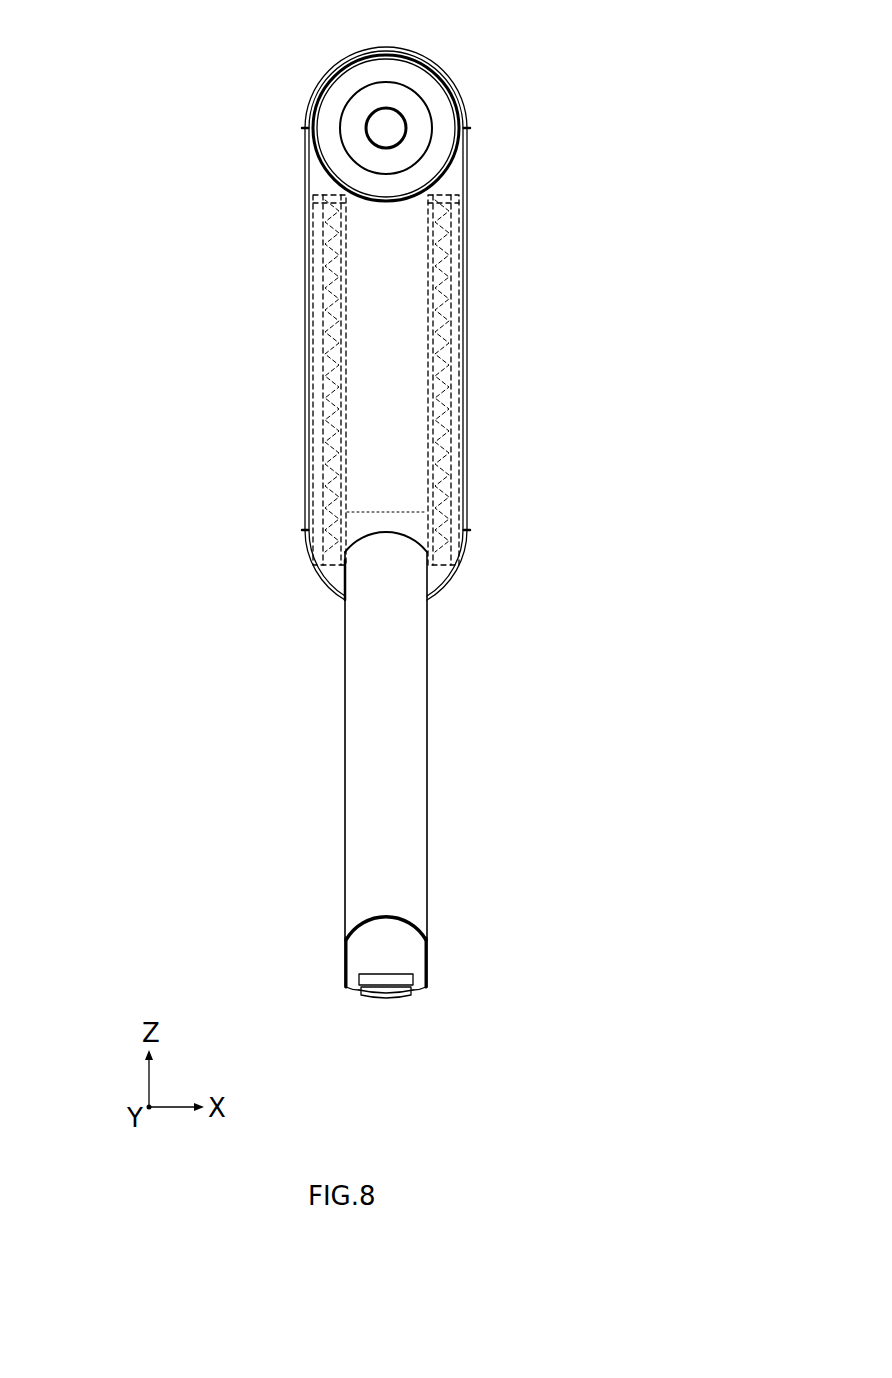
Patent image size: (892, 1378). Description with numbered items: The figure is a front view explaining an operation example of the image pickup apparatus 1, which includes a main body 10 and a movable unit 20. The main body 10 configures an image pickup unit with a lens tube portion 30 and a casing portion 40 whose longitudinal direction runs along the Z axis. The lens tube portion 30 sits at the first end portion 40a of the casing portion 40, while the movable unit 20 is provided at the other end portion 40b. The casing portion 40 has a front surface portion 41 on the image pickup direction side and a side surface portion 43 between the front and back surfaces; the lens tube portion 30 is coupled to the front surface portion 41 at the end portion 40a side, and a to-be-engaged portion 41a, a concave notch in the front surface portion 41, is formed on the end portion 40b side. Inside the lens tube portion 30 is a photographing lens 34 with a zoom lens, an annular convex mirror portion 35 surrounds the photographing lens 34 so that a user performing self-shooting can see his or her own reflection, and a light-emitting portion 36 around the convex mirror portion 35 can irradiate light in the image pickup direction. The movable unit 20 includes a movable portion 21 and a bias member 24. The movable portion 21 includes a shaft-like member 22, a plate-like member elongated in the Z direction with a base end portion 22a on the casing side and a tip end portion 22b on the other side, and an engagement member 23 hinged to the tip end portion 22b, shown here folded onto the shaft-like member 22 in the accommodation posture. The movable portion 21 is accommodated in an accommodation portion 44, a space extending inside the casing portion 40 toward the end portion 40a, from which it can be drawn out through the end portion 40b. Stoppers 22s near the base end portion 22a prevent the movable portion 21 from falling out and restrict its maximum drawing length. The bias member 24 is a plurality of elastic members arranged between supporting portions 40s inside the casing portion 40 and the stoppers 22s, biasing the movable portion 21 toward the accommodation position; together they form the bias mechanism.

The image pickup apparatus 1 is at (594, 78).
The main body 10 is at (228, 177).
The movable unit 20 is at (172, 895).
The movable portion 21 is at (252, 778).
The shaft-like member 22 is at (360, 797).
The base end portion 22a is at (403, 512).
The tip end portion 22b is at (390, 998).
The stoppers 22s is at (317, 578).
The engagement member 23 is at (355, 959).
The bias member 24 is at (455, 312).
The lens tube portion 30 is at (330, 181).
The photographing lens 34 is at (398, 127).
The convex mirror portion 35 is at (413, 141).
The light-emitting portion 36 is at (335, 105).
The casing portion 40 is at (324, 243).
The end portion 40a is at (452, 83).
The end portion 40b is at (432, 598).
The supporting portions 40s is at (464, 222).
The front surface portion 41 is at (372, 355).
The to-be-engaged portion 41a is at (425, 545).
The side surface portion 43 is at (318, 428).
The accommodation portion 44 is at (455, 387).